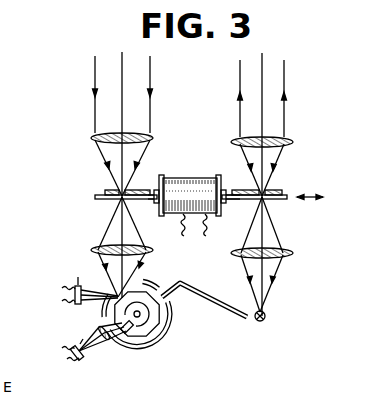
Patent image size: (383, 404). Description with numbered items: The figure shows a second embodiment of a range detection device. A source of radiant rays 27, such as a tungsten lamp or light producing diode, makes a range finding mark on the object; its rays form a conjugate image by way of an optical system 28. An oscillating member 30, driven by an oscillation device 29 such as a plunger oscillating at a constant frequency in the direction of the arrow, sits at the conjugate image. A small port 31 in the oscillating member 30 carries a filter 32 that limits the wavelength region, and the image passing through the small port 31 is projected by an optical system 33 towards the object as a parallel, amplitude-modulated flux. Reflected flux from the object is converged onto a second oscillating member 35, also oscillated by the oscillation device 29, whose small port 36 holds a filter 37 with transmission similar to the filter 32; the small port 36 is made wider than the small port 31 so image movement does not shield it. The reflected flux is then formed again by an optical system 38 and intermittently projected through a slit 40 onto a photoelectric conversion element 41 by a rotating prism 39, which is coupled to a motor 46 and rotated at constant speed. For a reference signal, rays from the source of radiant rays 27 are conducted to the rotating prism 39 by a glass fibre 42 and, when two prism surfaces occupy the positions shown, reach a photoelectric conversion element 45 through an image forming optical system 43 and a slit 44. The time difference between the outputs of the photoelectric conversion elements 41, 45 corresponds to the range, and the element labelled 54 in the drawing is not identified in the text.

The source of radiant rays 27 is at (266, 316).
The optical system 28 is at (293, 253).
The oscillation device 29 is at (193, 178).
The oscillating member 30 is at (287, 197).
The small port 31 is at (266, 200).
The filter 32 is at (270, 190).
The optical system 33 is at (290, 140).
The oscillating member 35 is at (96, 195).
The small port 36 is at (128, 200).
The filter 37 is at (130, 191).
The optical system 38 is at (92, 250).
The rotating prism 39 is at (143, 330).
The slit 40 is at (78, 305).
The photoelectric conversion element 41 is at (60, 289).
The glass fibre 42 is at (216, 306).
The image forming optical system 43 is at (105, 337).
The slit 44 is at (85, 358).
The photoelectric conversion element 45 is at (63, 353).
The motor 46 is at (164, 333).
The lens 54 is at (150, 136).